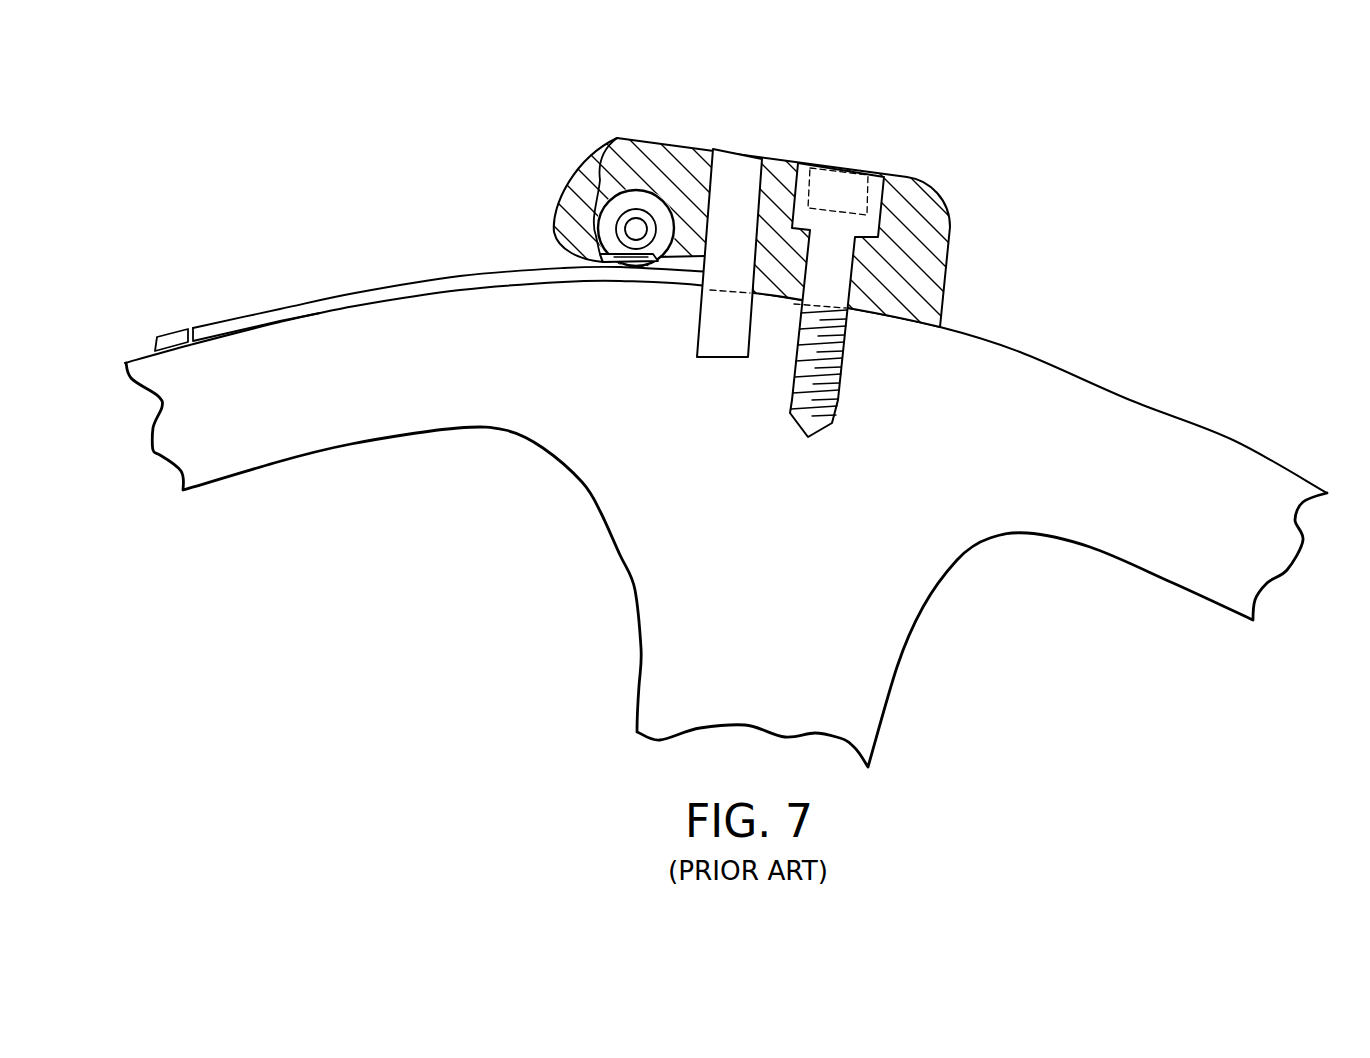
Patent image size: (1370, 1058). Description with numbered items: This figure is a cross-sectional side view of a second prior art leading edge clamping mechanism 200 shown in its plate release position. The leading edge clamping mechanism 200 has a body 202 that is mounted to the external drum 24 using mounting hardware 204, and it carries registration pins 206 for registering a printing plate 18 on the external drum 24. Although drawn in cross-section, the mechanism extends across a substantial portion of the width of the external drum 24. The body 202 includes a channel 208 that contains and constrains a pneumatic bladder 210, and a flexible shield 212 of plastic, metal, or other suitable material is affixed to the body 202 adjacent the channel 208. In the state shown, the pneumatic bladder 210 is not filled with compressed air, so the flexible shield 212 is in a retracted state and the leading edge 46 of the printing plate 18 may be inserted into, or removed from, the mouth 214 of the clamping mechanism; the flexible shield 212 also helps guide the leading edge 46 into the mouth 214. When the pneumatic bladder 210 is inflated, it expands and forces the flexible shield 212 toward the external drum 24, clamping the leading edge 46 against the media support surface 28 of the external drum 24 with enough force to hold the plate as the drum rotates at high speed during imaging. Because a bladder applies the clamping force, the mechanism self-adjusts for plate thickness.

The leading edge clamping mechanism 200 is at (749, 228).
The body 202 is at (943, 202).
The mounting hardware 204 is at (850, 176).
The registration pins 206 is at (741, 158).
The channel 208 is at (619, 135).
The pneumatic bladder 210 is at (560, 228).
The flexible shield 212 is at (600, 264).
The mouth 214 is at (535, 252).
The printing plate 18 is at (283, 301).
The media support surface 28 is at (190, 335).
The leading edge 46 is at (647, 282).
The external drum 24 is at (1058, 376).